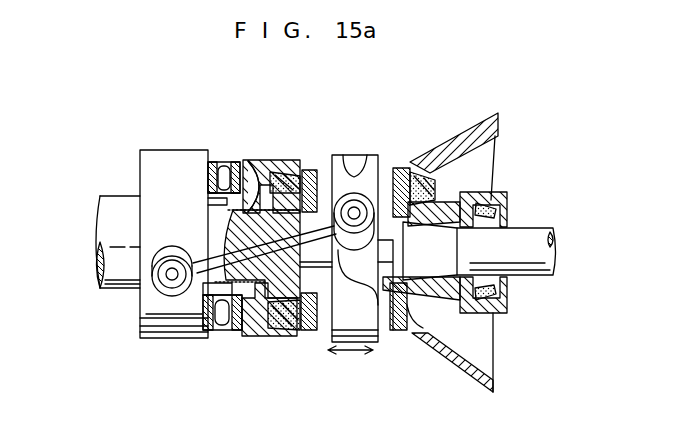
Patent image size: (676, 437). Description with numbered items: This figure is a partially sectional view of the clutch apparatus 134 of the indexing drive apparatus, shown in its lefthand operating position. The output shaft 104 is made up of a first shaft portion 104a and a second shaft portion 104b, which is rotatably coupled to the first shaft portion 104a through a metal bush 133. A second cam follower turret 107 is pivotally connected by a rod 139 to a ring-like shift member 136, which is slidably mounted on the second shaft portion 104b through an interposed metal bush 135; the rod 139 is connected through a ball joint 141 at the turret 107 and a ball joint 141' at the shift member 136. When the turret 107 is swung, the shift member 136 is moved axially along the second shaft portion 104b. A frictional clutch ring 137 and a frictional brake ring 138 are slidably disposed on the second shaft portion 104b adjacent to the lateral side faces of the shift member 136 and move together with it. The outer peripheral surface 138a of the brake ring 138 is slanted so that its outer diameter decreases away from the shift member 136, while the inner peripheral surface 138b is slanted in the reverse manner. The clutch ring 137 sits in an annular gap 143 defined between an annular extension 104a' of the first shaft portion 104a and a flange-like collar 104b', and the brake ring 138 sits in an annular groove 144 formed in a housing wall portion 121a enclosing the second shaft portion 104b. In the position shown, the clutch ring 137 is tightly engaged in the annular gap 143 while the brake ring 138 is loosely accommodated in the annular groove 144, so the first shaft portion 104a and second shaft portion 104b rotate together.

The output shaft 104 is at (94, 240).
The first shaft portion 104a is at (111, 223).
The annular extension 104a' is at (246, 289).
The second shaft portion 104b is at (477, 242).
The flange-like collar 104b' is at (272, 172).
The second cam follower turret 107 is at (158, 150).
The housing wall portion 121a is at (464, 140).
The metal bush 133 is at (240, 164).
The clutch apparatus 134 is at (355, 362).
The metal bush 135 is at (392, 332).
The ring-like shift member 136 is at (354, 155).
The frictional clutch ring 137 is at (268, 338).
The frictional brake ring 138 is at (404, 168).
The outer peripheral surface 138a is at (420, 336).
The inner peripheral surface 138b is at (428, 318).
The rod 139 is at (212, 242).
The ball joint 141 is at (142, 284).
The ball joint 141' is at (333, 174).
The annular gap 143 is at (286, 332).
The annular groove 144 is at (432, 186).